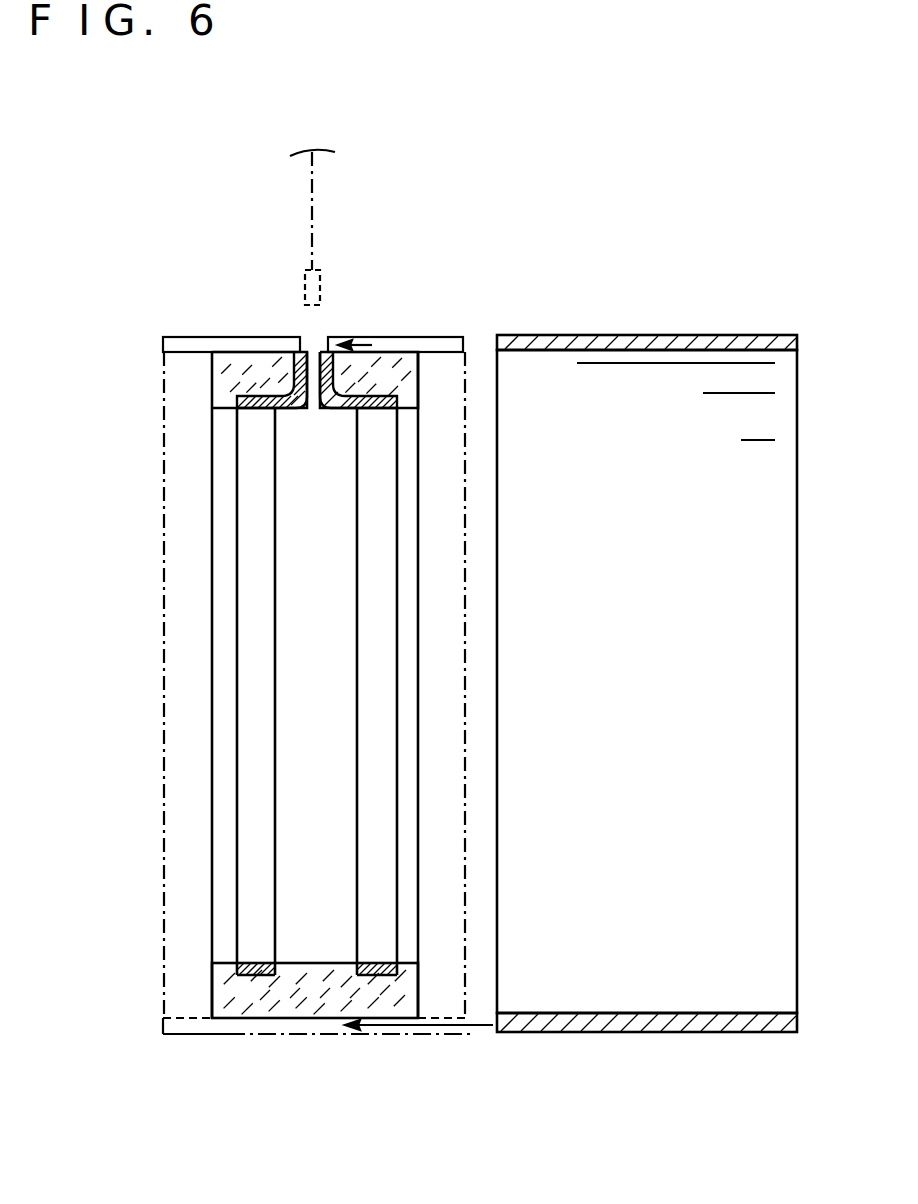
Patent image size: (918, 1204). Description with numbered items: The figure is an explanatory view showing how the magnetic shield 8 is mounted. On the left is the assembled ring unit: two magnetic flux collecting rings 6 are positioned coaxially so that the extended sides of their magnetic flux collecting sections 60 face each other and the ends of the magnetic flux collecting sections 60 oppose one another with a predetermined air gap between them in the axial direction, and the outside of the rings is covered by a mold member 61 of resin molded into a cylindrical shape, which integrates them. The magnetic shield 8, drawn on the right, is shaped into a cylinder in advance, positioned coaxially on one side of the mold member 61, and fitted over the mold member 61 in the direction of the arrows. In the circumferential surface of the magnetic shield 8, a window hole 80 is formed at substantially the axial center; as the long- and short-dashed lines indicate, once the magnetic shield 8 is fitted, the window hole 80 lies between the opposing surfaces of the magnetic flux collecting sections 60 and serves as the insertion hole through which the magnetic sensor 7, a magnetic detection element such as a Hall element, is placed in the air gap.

The magnetic flux collecting ring 6 is at (245, 432).
The magnetic flux collecting section 60 is at (362, 375).
The mold member 61 is at (215, 988).
The magnetic sensor 7 is at (303, 284).
The magnetic shield 8 is at (447, 335).
The window hole 80 is at (305, 336).